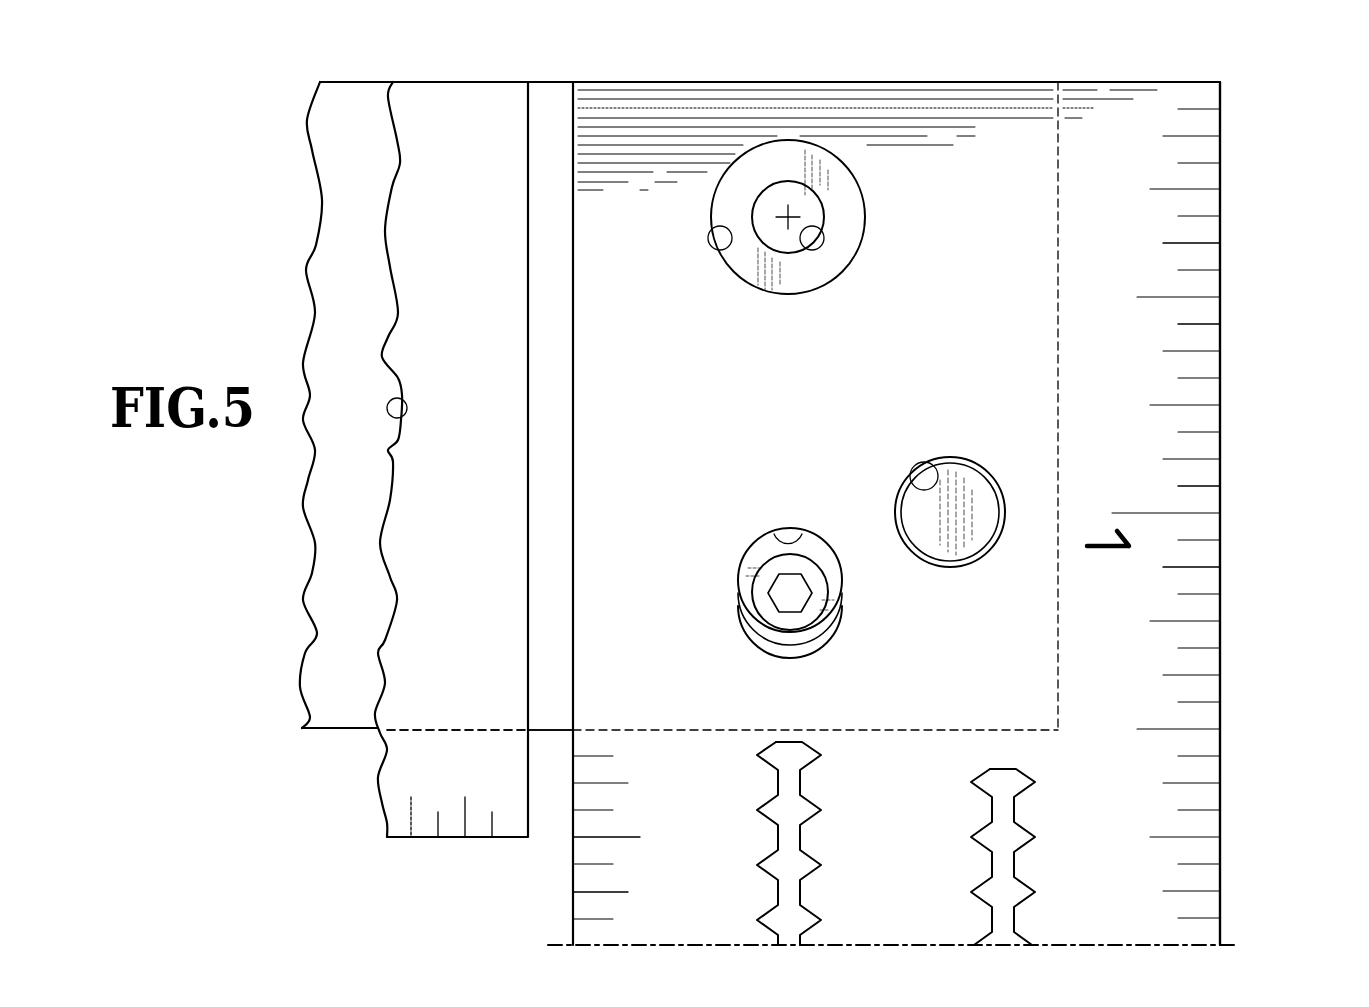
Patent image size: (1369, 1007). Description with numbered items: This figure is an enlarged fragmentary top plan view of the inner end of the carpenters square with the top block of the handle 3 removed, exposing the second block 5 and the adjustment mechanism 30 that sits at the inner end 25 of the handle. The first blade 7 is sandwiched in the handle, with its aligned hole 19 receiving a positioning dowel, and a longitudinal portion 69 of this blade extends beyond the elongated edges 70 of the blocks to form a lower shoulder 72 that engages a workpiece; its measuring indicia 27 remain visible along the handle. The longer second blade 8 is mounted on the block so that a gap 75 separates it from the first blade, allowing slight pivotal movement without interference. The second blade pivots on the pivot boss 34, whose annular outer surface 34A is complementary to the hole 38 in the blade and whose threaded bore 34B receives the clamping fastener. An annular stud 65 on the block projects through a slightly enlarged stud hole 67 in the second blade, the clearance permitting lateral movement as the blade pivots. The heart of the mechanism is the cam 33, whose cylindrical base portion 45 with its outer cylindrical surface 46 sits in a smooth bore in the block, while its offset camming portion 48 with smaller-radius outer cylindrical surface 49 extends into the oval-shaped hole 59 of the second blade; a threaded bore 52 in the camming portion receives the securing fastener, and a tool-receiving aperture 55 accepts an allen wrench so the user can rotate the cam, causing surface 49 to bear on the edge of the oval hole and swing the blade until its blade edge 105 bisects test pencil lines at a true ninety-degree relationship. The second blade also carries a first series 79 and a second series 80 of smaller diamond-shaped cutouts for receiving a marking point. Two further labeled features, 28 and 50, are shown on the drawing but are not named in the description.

The handle 3 is at (345, 845).
The second block 5 is at (345, 95).
The first blade 7 is at (468, 90).
The second blade 8 is at (1232, 412).
The aligned hole 19 is at (405, 398).
The inner end 25 is at (1080, 145).
The measuring indicia 27 is at (488, 815).
The graduation marks 28 is at (1193, 245).
The adjustment mechanism 30 is at (799, 586).
The cam 33 is at (867, 612).
The pivot boss 34 is at (799, 224).
The annular outer surface 34A is at (866, 222).
The threaded bore 34B is at (802, 253).
The hole 38 is at (716, 248).
The cylindrical base portion 45 is at (867, 612).
The outer cylindrical surface 46 is at (828, 660).
The camming portion 48 is at (716, 612).
The outer cylindrical surface 49 is at (740, 648).
The bolt 50 is at (748, 592).
The threaded bore 52 is at (760, 586).
The tool-receiving aperture 55 is at (800, 585).
The oval-shaped hole 59 is at (782, 535).
The annular stud 65 is at (918, 523).
The stud hole 67 is at (930, 472).
The longitudinal portion 69 is at (432, 760).
The elongated edges 70 is at (294, 759).
The lower shoulder 72 is at (340, 732).
The gap 75 is at (543, 790).
The first series of smaller diamond-shaped cutouts 79 is at (818, 846).
The second series of smaller diamond-shaped cutouts 80 is at (1028, 822).
The blade edge 105 is at (1220, 202).